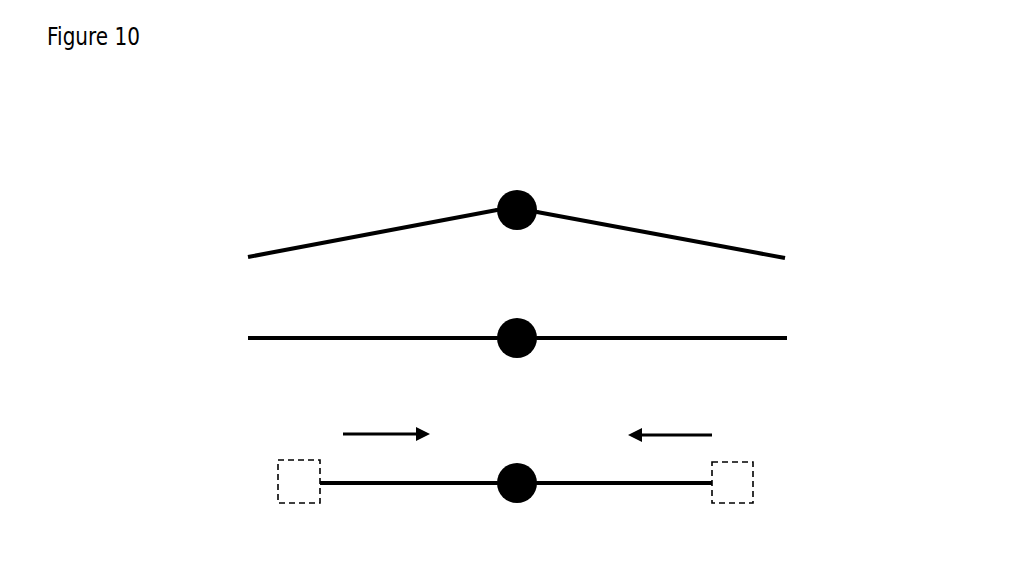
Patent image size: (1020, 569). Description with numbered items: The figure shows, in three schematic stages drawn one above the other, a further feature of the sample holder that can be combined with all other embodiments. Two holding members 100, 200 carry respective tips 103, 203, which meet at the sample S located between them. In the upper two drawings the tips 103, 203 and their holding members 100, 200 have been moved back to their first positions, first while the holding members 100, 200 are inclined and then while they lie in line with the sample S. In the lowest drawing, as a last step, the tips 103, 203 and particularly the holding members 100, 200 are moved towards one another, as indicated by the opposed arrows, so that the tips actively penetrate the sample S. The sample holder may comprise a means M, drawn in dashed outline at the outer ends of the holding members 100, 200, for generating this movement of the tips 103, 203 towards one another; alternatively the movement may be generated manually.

The holding member 100 is at (383, 228).
The holding member 200 is at (677, 233).
The tip 103 is at (487, 210).
The tip 203 is at (543, 210).
The sample S is at (512, 192).
The means for generating movement M is at (291, 477).